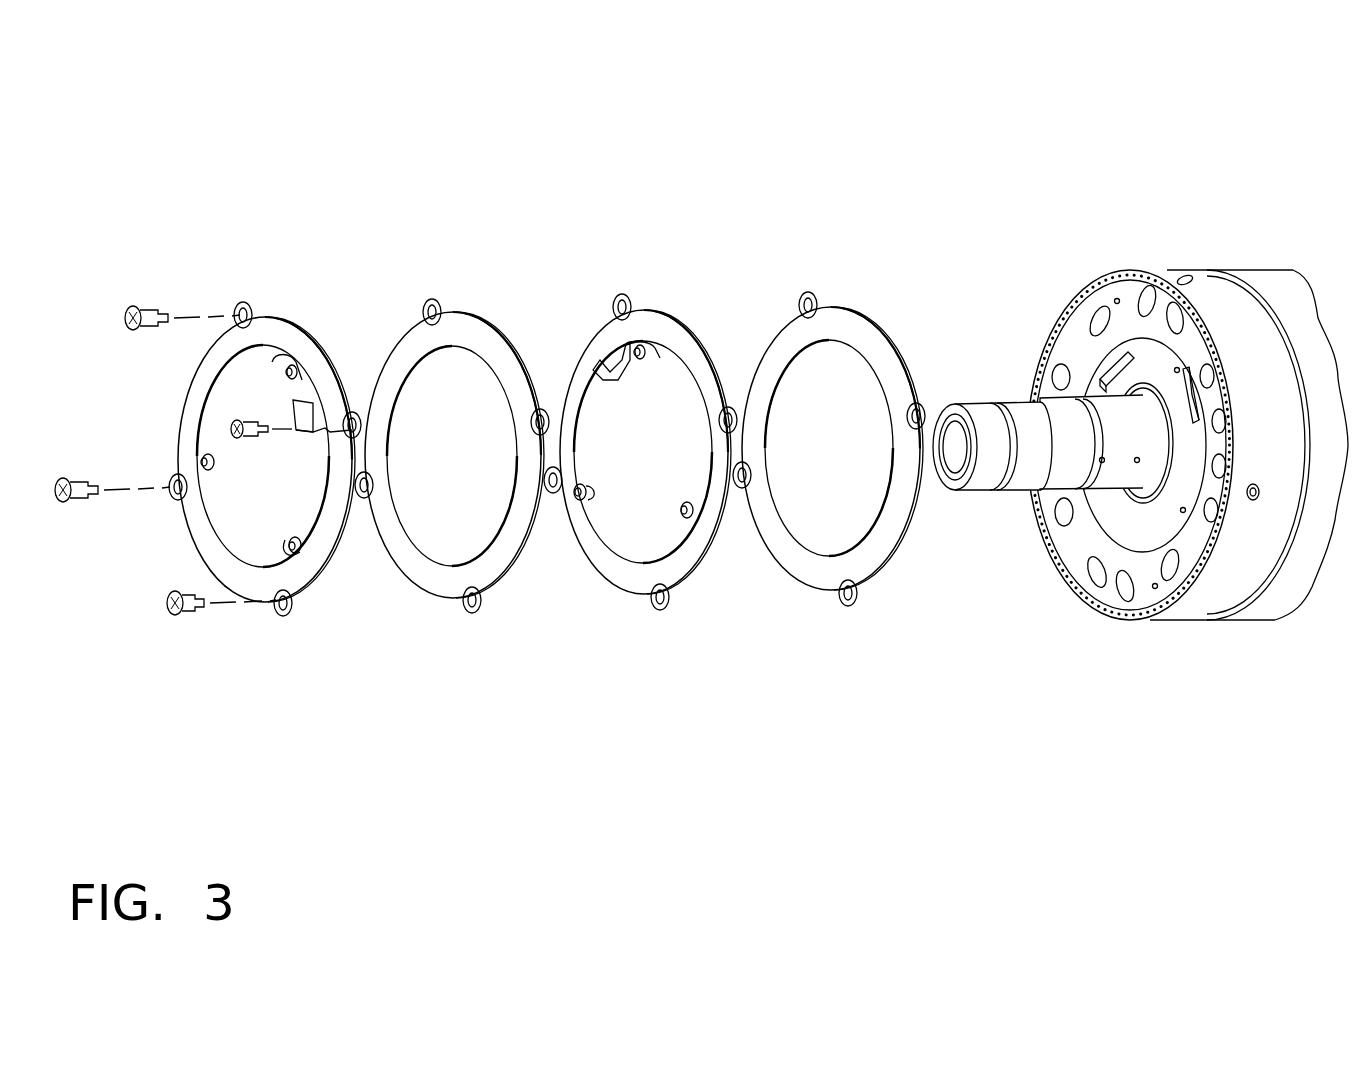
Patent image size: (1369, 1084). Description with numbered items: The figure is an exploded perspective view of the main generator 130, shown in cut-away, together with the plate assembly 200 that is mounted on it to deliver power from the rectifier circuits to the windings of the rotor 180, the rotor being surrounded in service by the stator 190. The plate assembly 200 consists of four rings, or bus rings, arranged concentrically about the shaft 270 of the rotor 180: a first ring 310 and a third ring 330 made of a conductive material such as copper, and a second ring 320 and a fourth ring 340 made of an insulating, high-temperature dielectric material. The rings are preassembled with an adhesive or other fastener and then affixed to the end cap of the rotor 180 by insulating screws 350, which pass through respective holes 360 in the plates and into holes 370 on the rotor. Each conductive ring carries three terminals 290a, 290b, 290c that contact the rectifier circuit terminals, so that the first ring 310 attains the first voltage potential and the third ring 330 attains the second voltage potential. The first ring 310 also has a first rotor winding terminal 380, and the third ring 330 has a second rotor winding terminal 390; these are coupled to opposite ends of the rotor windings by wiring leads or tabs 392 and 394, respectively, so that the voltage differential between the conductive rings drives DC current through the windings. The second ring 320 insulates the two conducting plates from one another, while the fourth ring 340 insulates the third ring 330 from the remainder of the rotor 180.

The main generator 130 is at (1090, 138).
The rotor 180 is at (1084, 603).
The stator 190 is at (1128, 622).
The plate assembly 200 is at (557, 684).
The shaft 270 is at (1001, 500).
The terminal 290a is at (212, 462).
The terminal 290b is at (288, 362).
The terminal 290c is at (297, 544).
The first ring 310 is at (283, 264).
The second ring 320 is at (421, 264).
The third ring 330 is at (656, 260).
The fourth ring 340 is at (797, 260).
The insulating screws 350 is at (230, 426).
The holes 360 is at (428, 308).
The holes 370 is at (1117, 298).
The first rotor winding terminal 380 is at (294, 415).
The second rotor winding terminal 390 is at (601, 380).
The wiring lead or tab 392 is at (1184, 394).
The wiring lead or tab 394 is at (1100, 378).